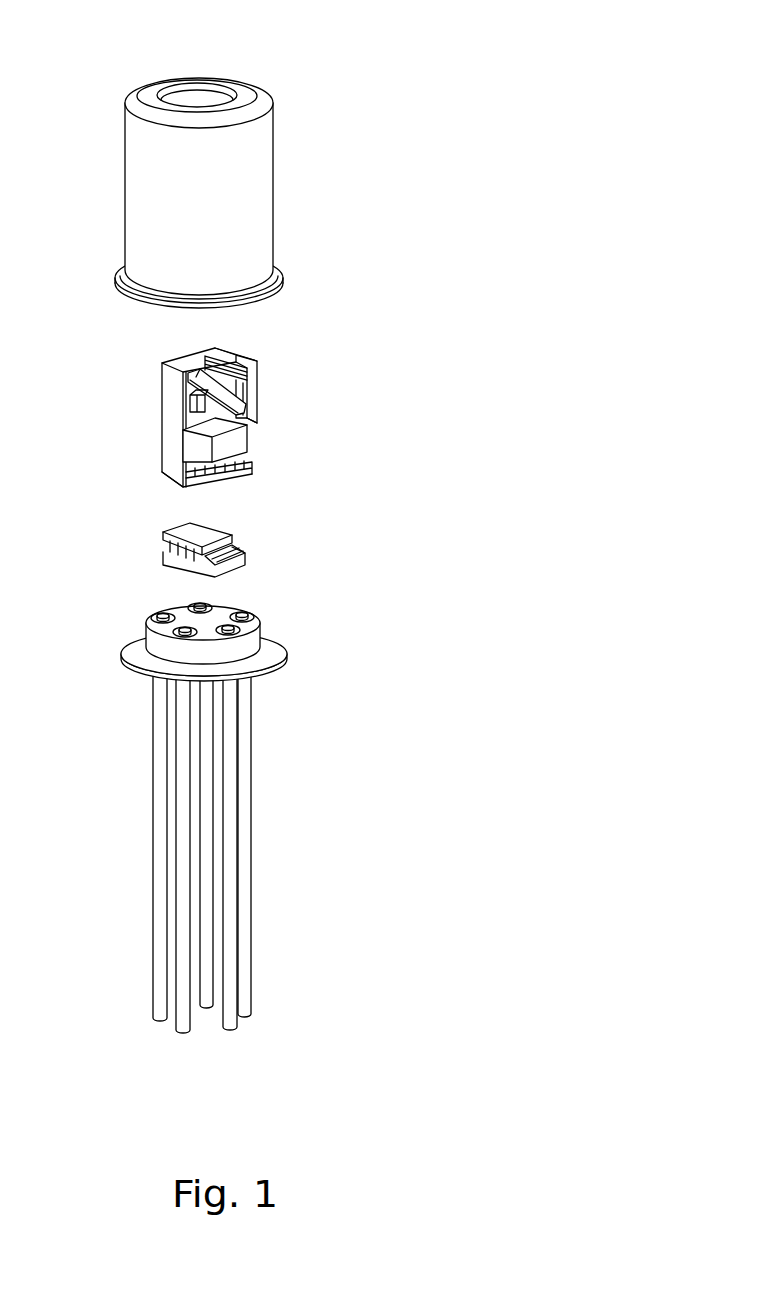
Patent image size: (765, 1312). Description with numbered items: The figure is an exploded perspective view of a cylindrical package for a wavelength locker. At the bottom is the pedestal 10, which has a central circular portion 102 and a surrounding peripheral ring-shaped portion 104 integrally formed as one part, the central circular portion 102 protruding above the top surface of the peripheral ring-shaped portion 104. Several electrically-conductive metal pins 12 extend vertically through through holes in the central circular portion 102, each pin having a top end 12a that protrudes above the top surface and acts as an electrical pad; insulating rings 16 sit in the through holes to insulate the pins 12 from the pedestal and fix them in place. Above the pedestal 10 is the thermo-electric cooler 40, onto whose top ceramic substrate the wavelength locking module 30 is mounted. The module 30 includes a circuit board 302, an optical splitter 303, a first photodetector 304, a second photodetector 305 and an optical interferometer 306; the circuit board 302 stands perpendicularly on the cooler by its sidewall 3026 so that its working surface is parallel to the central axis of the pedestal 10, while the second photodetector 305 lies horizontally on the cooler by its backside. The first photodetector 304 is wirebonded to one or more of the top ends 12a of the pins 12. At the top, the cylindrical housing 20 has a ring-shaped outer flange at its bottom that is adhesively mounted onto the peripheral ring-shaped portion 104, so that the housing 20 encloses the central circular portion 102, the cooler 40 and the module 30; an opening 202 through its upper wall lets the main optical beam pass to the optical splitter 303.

The pedestal 10 is at (238, 808).
The central circular portion 102 is at (148, 622).
The peripheral ring-shaped portion 104 is at (138, 652).
The electrically-conductive metal pins 12 is at (162, 780).
The top end 12a is at (187, 634).
The insulating rings 16 is at (188, 611).
The cylindrical housing 20 is at (316, 192).
The opening 202 is at (200, 88).
The wavelength locking module 30 is at (284, 428).
The circuit board 302 is at (168, 418).
The sidewall 3026 is at (162, 475).
The optical splitter 303 is at (190, 381).
The first photodetector 304 is at (253, 389).
The second photodetector 305 is at (256, 466).
The optical interferometer 306 is at (192, 448).
The thermo-electric cooler 40 is at (251, 551).